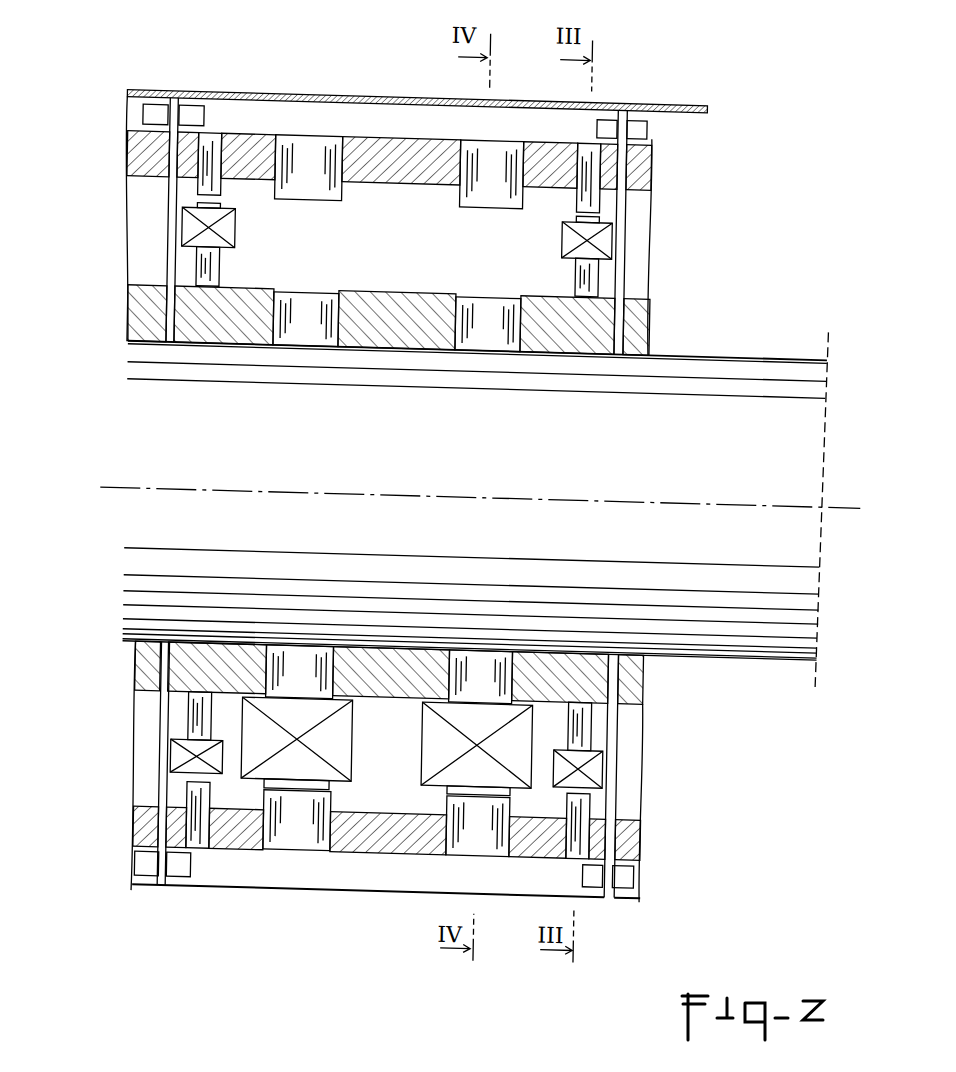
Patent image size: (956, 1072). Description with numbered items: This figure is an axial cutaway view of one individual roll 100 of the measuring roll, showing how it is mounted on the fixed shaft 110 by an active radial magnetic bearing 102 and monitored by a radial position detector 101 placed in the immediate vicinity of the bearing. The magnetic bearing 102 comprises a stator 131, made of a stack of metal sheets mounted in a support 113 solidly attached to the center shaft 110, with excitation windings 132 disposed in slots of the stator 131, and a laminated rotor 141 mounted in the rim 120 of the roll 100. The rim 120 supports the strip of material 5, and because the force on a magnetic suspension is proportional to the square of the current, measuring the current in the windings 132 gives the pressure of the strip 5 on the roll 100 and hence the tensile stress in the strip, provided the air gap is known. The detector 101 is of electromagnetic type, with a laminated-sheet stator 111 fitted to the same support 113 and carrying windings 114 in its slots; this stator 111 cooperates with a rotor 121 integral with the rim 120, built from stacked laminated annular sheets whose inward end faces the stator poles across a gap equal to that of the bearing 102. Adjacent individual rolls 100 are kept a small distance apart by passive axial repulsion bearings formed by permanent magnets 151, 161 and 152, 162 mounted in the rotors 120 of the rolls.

The strip of material 5 is at (691, 86).
The individual roll 100 is at (265, 888).
The radial position detector 101 is at (169, 234).
The radial magnetic bearing 102 is at (275, 780).
The fixed shaft 110 is at (757, 352).
The stator 111 is at (215, 257).
The support 113 is at (601, 303).
The windings 114 is at (604, 233).
The rim 120 is at (615, 146).
The rotor 121 is at (592, 184).
The stator 131 is at (311, 324).
The windings 132 is at (438, 725).
The laminated rotor 141 is at (303, 188).
The permanent magnet 151 is at (146, 100).
The permanent magnet 152 is at (649, 116).
The permanent magnet 161 is at (206, 104).
The permanent magnet 162 is at (599, 113).